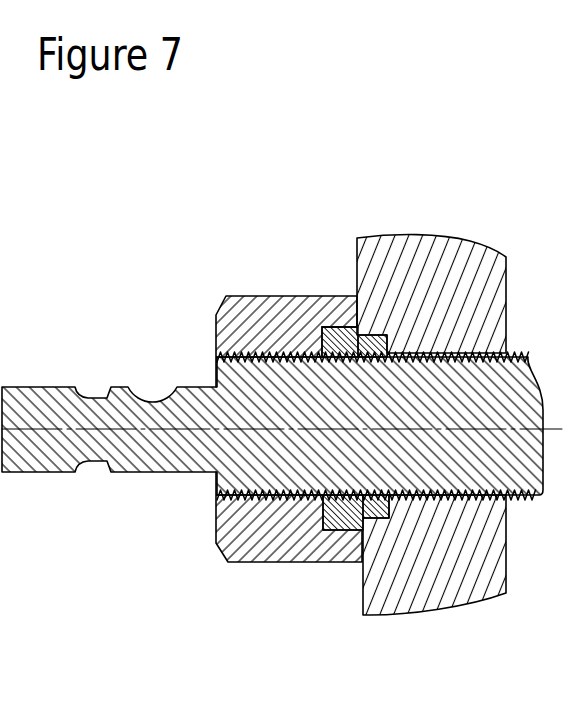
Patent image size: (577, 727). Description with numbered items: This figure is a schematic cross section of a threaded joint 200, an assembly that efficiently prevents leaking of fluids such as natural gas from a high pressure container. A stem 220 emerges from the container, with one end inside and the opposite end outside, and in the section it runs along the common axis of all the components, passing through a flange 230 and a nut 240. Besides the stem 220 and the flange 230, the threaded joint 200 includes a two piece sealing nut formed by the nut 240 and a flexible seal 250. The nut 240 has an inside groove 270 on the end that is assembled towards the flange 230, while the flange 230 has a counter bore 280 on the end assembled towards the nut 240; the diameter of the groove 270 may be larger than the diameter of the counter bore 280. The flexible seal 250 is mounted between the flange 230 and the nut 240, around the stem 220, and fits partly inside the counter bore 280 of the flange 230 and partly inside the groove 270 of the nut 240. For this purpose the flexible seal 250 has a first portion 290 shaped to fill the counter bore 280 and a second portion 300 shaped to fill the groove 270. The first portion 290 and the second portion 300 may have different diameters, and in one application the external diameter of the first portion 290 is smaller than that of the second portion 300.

The threaded joint 200 is at (147, 180).
The stem 220 is at (58, 387).
The flange 230 is at (446, 266).
The nut 240 is at (226, 553).
The flexible seal 250 is at (327, 530).
The inside groove 270 is at (346, 325).
The counter bore 280 is at (380, 528).
The first portion 290 is at (375, 353).
The second portion 300 is at (329, 324).